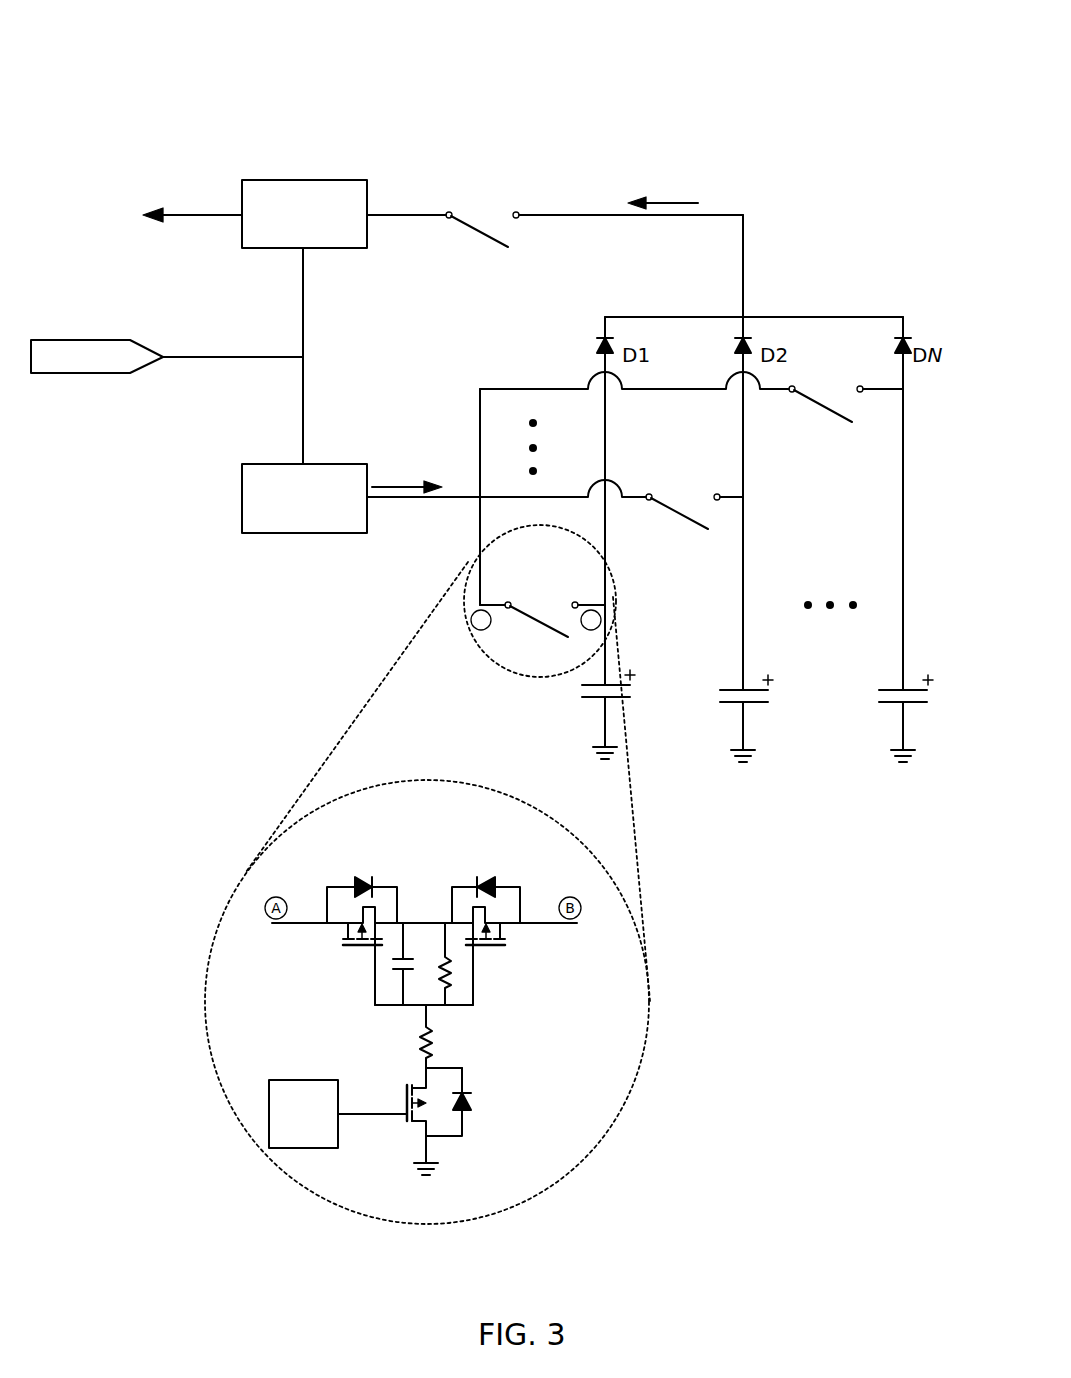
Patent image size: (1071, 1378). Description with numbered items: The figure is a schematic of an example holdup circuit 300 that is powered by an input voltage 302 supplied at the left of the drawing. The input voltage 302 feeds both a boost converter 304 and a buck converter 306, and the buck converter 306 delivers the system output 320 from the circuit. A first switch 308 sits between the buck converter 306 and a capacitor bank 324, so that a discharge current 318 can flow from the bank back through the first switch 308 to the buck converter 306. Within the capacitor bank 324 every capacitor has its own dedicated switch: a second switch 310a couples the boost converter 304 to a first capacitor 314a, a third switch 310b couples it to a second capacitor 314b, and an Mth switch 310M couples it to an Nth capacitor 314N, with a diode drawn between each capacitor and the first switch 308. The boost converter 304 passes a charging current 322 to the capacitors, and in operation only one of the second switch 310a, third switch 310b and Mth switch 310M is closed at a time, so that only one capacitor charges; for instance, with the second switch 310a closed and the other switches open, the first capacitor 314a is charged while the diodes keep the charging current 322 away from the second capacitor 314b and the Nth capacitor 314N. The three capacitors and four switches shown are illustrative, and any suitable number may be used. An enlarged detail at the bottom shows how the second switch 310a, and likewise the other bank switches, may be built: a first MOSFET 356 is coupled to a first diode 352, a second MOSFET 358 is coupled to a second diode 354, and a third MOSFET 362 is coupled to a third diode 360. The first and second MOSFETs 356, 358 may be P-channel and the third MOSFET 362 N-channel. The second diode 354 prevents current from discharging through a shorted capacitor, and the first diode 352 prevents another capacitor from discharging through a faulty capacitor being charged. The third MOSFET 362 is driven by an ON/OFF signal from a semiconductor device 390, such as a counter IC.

The holdup circuit 300 is at (131, 70).
The input voltage 302 is at (100, 340).
The boost converter 304 is at (264, 464).
The buck converter 306 is at (278, 180).
The first switch 308 is at (479, 193).
The second switch 310a is at (523, 598).
The third switch 310b is at (667, 490).
The Mth switch 310M is at (805, 384).
The first capacitor 314a is at (594, 698).
The second capacitor 314b is at (727, 689).
The Nth capacitor 314N is at (882, 689).
The discharge current IDISCHG 318 is at (676, 203).
The system voltage output VSYS 320 is at (190, 213).
The charging current 322 is at (396, 486).
The capacitor bank 324 is at (851, 828).
The first diode 352 is at (358, 876).
The second diode 354 is at (485, 876).
The first MOSFET 356 is at (355, 947).
The second MOSFET 358 is at (493, 947).
The third diode 360 is at (462, 1123).
The third MOSFET 362 is at (414, 1090).
The semiconductor device 390 is at (299, 1080).